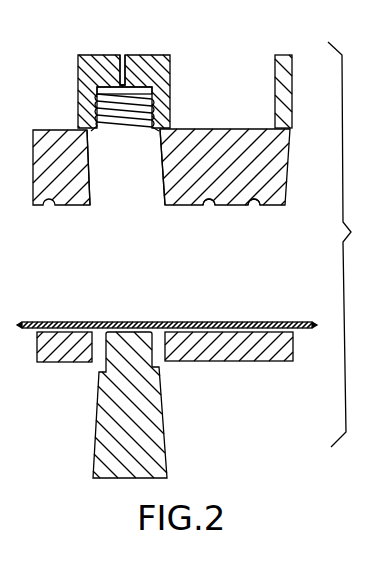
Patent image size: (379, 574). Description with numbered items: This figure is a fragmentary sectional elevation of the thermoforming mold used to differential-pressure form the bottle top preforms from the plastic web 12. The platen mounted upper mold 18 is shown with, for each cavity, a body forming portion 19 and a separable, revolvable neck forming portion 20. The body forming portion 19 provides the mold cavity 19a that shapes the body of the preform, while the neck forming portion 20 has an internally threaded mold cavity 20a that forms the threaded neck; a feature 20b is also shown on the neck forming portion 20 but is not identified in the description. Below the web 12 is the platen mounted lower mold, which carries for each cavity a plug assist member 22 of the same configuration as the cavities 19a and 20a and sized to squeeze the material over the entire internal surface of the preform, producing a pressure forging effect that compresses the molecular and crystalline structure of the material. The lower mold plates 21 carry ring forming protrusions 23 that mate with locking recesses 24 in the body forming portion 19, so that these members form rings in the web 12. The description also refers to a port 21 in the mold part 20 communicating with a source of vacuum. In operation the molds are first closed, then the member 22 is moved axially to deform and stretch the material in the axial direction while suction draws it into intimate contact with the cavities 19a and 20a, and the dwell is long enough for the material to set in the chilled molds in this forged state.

The plastic web 12 is at (310, 322).
The upper mold 18 is at (75, 121).
The body forming portion 19 is at (277, 153).
The mold cavity 19a is at (162, 185).
The neck forming portion 20 is at (163, 67).
The internally threaded mold cavity 20a is at (143, 97).
The slot 20b is at (127, 70).
The lower mold plate 21 is at (284, 354).
The plug assist member 22 is at (153, 438).
The ring forming protrusions 23 is at (211, 324).
The locking recesses 24 is at (251, 207).